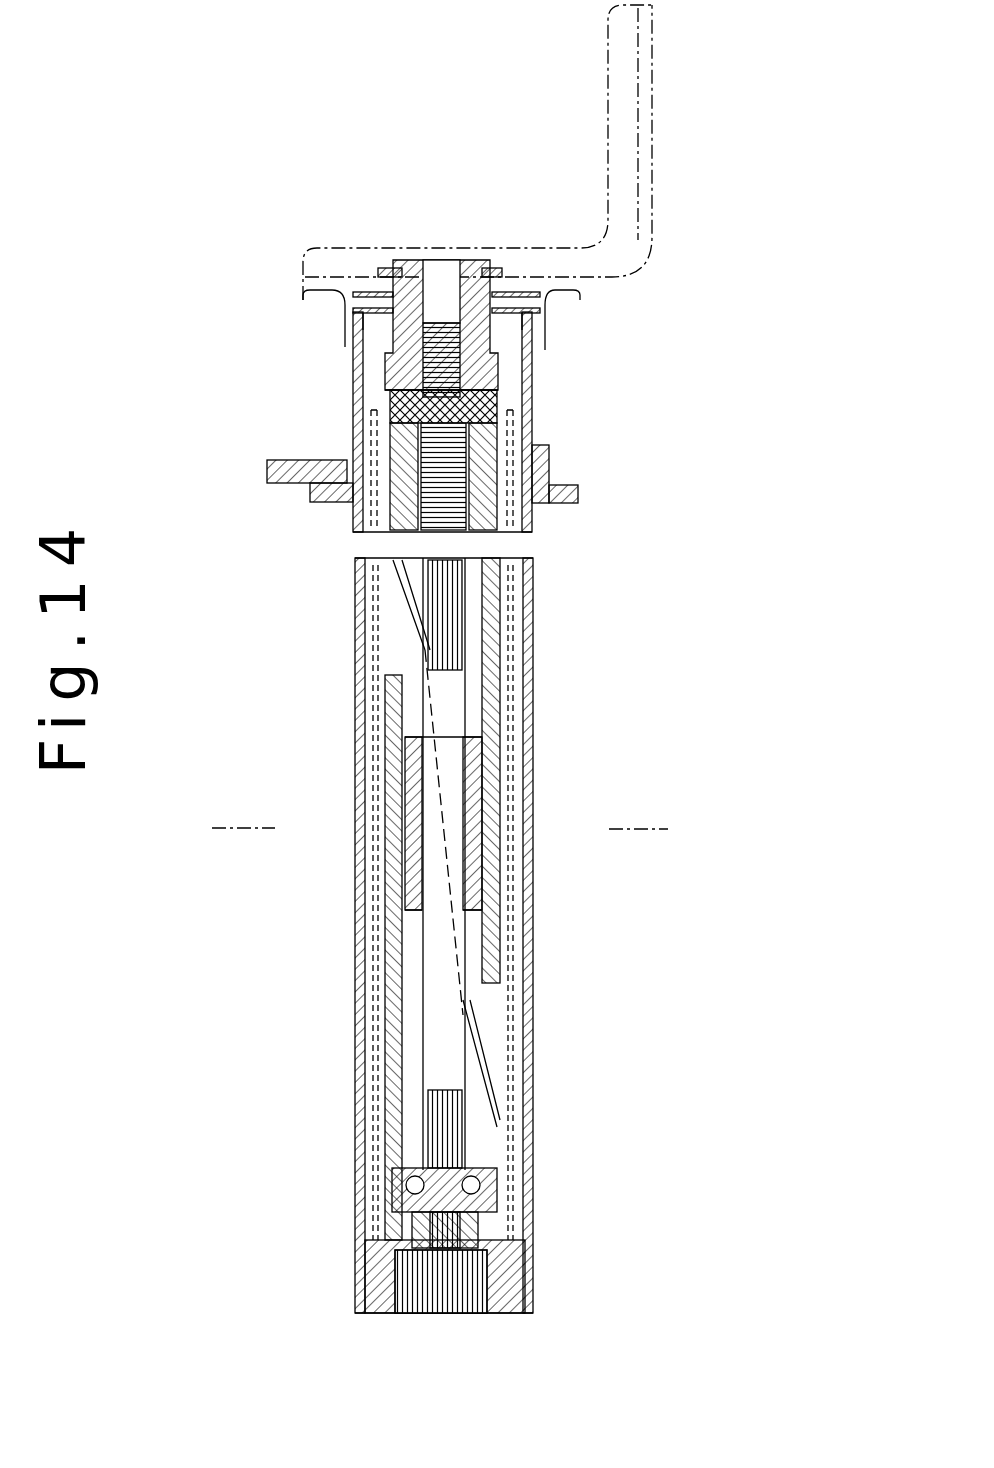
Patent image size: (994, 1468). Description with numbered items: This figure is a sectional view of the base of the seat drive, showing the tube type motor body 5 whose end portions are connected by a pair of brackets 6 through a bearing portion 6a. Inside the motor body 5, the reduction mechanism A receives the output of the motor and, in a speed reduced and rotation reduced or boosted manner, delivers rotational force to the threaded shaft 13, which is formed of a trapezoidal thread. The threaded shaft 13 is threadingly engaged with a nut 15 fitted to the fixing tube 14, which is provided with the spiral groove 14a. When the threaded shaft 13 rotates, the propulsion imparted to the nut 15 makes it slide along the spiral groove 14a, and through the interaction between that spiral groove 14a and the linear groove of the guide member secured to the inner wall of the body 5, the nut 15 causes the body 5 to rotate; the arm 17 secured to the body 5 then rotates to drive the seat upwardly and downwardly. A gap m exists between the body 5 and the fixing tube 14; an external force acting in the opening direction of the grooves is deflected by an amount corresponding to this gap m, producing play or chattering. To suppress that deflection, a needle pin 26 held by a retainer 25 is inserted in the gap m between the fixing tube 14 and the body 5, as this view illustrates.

The tube type motor body 5 is at (535, 380).
The bracket 6 is at (340, 290).
The bearing portion 6a is at (470, 290).
The threaded shaft 13 is at (453, 1068).
The fixing tube 14 is at (526, 888).
The spiral groove 14a is at (397, 630).
The nut 15 is at (523, 767).
The arm 17 is at (285, 467).
The retainer 25 is at (525, 421).
The needle pin 26 is at (368, 970).
The motor M is at (375, 1220).
The reduction mechanism A is at (380, 1270).